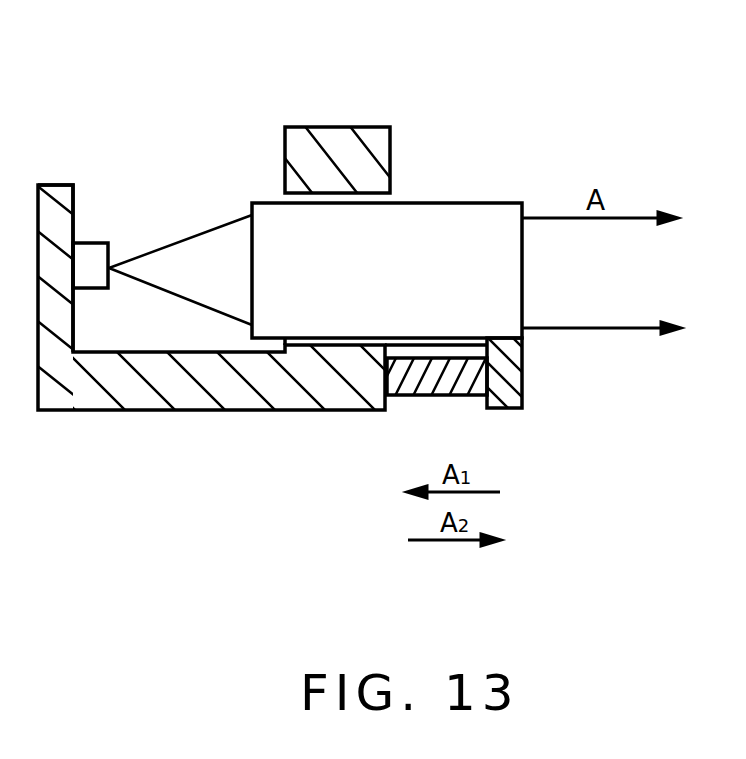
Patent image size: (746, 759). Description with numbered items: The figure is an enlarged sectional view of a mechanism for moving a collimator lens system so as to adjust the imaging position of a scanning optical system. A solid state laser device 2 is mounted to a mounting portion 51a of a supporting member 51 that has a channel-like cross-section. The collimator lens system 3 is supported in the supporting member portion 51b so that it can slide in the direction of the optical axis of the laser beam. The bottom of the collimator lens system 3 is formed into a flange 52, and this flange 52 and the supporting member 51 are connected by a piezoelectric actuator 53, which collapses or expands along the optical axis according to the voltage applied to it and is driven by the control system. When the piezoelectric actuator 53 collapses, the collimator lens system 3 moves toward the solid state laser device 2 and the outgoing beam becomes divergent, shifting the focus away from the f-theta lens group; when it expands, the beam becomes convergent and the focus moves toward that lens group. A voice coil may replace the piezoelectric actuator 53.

The solid state laser device 2 is at (96, 243).
The collimator lens system 3 is at (450, 203).
The supporting member 51 is at (181, 410).
The mounting portion 51a is at (57, 185).
The supporting member portion 51b is at (338, 127).
The flange 52 is at (514, 408).
The piezoelectric actuator 53 is at (406, 395).